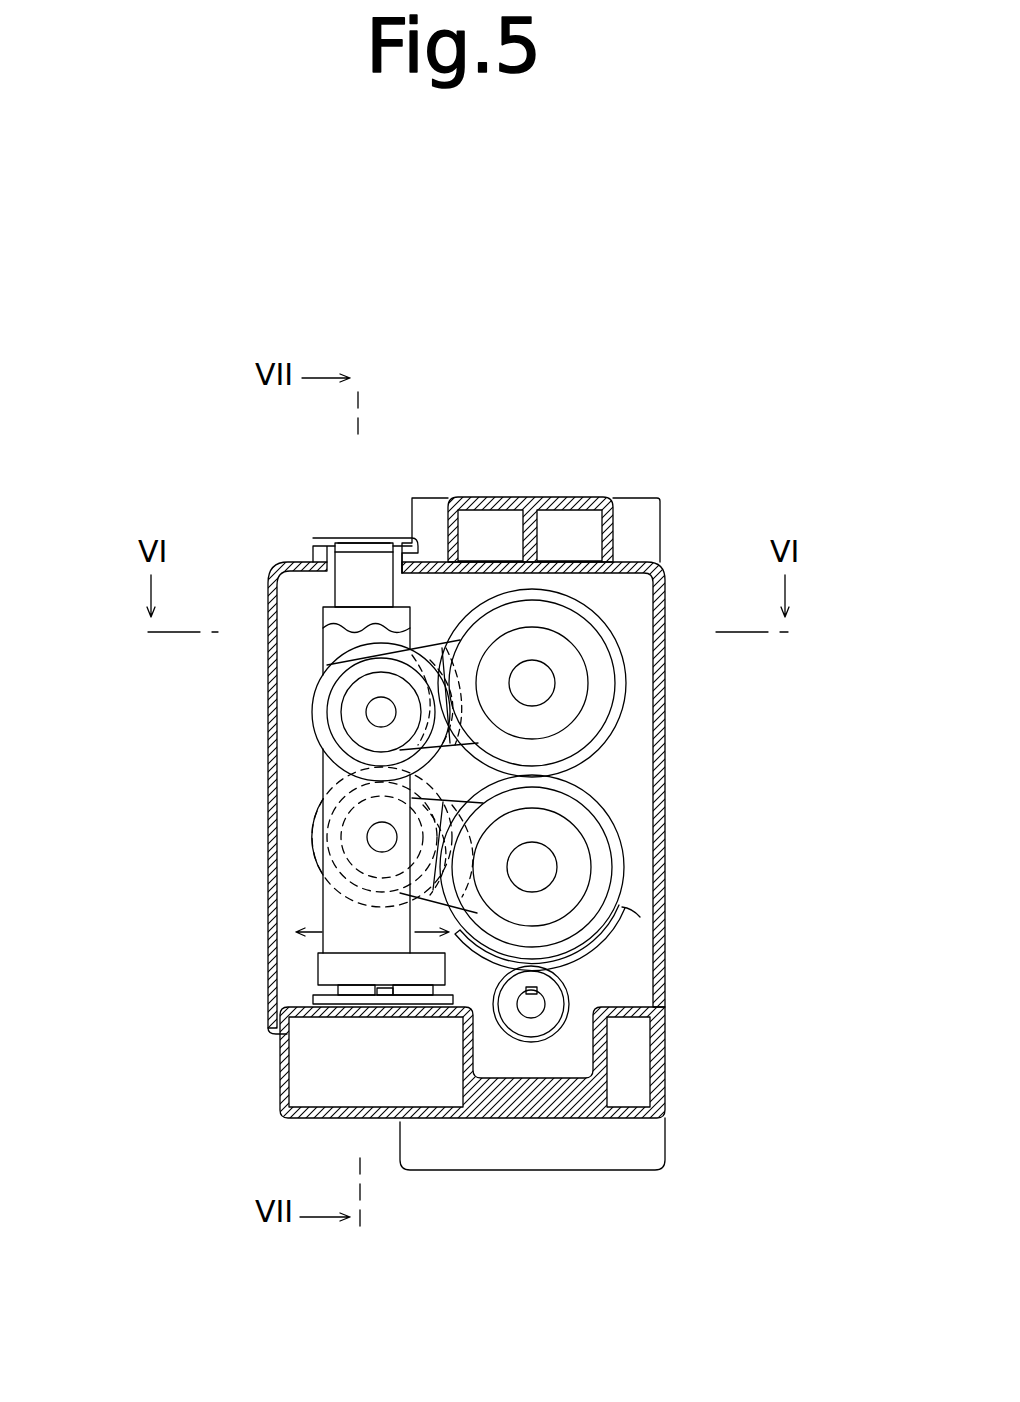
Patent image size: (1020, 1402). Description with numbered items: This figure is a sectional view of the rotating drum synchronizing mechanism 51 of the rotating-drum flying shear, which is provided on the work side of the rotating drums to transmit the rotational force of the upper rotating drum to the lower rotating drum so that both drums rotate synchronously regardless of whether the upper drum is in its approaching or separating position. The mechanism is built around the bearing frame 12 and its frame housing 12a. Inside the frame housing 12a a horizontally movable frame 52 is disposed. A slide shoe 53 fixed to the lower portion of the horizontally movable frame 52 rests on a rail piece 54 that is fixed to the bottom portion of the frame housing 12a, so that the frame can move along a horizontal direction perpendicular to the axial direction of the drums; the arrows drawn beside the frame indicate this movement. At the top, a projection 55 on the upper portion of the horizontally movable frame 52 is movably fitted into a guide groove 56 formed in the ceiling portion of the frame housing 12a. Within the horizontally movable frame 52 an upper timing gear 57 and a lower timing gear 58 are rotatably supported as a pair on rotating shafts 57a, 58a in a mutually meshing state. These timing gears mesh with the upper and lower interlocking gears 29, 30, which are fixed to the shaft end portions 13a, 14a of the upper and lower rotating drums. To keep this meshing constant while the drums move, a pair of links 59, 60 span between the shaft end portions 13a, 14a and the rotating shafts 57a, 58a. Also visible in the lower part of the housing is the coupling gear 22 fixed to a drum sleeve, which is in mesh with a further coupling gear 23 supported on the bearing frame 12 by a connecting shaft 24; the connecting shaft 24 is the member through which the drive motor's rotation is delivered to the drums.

The bearing frame 12 is at (620, 1152).
The frame housing 12a is at (660, 938).
The shaft end portion 13a is at (545, 672).
The shaft end portion 14a is at (548, 850).
The coupling gear 22 is at (610, 940).
The coupling gear 23 is at (560, 997).
The connecting shaft 24 is at (537, 1030).
The interlocking gear 29 is at (641, 575).
The interlocking gear 30 is at (627, 882).
The rotating drum synchronizing mechanism 51 is at (311, 599).
The horizontally movable frame 52 is at (345, 915).
The slide shoe 53 is at (357, 1010).
The rail piece 54 is at (300, 997).
The projection 55 is at (369, 577).
The guide groove 56 is at (333, 541).
The upper timing gear 57 is at (312, 694).
The rotating shaft 57a is at (367, 719).
The lower timing gear 58 is at (310, 848).
The rotating shaft 58a is at (367, 835).
The link 59 is at (590, 705).
The link 60 is at (590, 862).